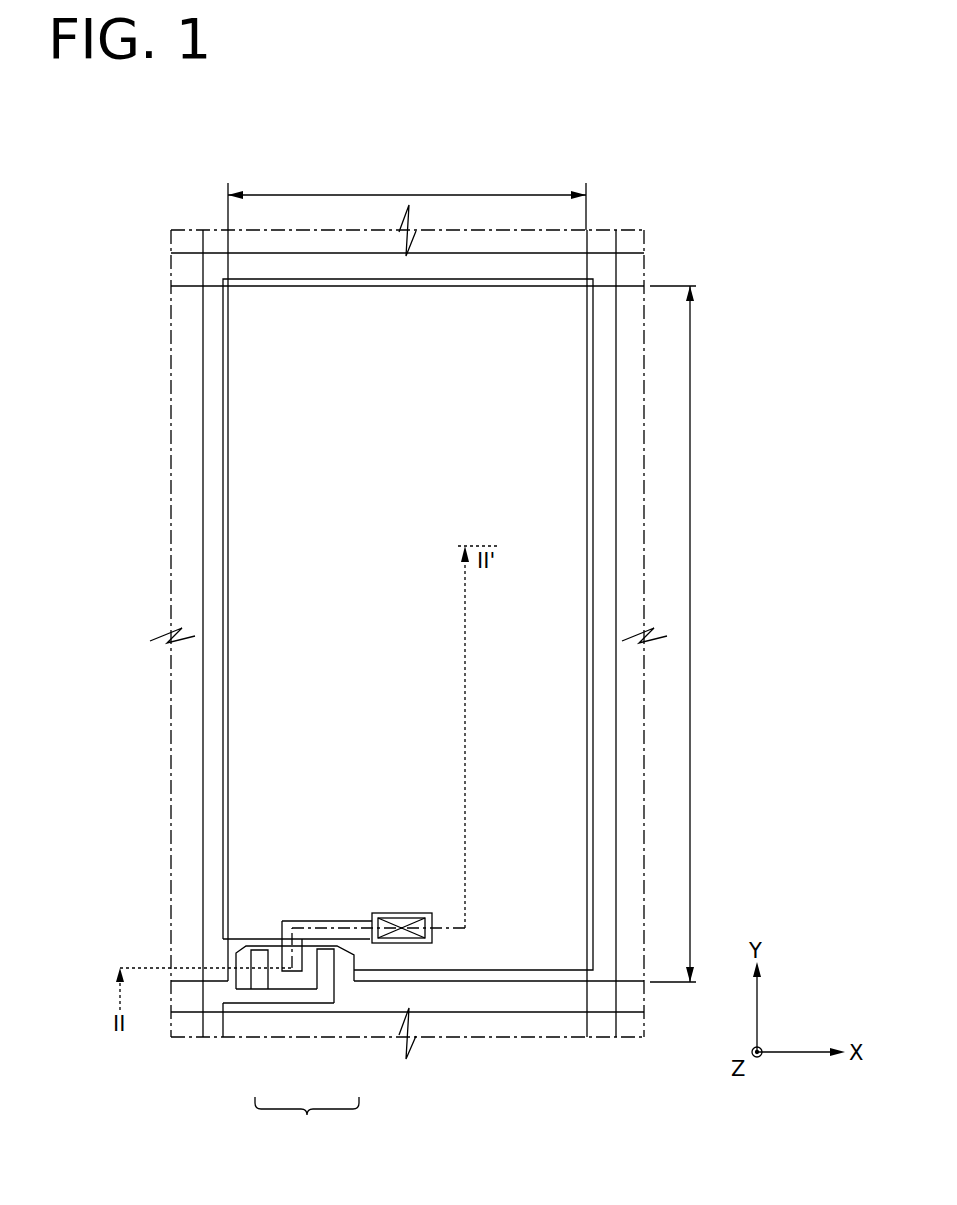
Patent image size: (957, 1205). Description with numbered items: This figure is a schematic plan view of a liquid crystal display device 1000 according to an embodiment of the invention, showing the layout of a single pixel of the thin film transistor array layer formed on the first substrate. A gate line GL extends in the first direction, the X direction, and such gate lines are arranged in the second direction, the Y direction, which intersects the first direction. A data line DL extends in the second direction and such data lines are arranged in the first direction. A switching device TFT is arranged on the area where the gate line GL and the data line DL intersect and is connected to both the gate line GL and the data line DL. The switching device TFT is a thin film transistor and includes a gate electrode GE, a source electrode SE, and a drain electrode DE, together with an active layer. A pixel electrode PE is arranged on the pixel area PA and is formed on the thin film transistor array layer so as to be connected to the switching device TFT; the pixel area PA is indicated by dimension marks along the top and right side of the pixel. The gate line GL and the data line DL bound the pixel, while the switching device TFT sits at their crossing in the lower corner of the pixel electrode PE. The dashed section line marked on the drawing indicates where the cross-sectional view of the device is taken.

The liquid crystal display device 1000 is at (720, 216).
The pixel area PA is at (477, 574).
The pixel electrode PE is at (228, 739).
The data line DL is at (213, 781).
The gate line GL is at (638, 1000).
The drain electrode DE is at (283, 972).
The source electrode SE is at (317, 978).
The gate electrode GE is at (354, 981).
The switching device TFT is at (307, 1123).